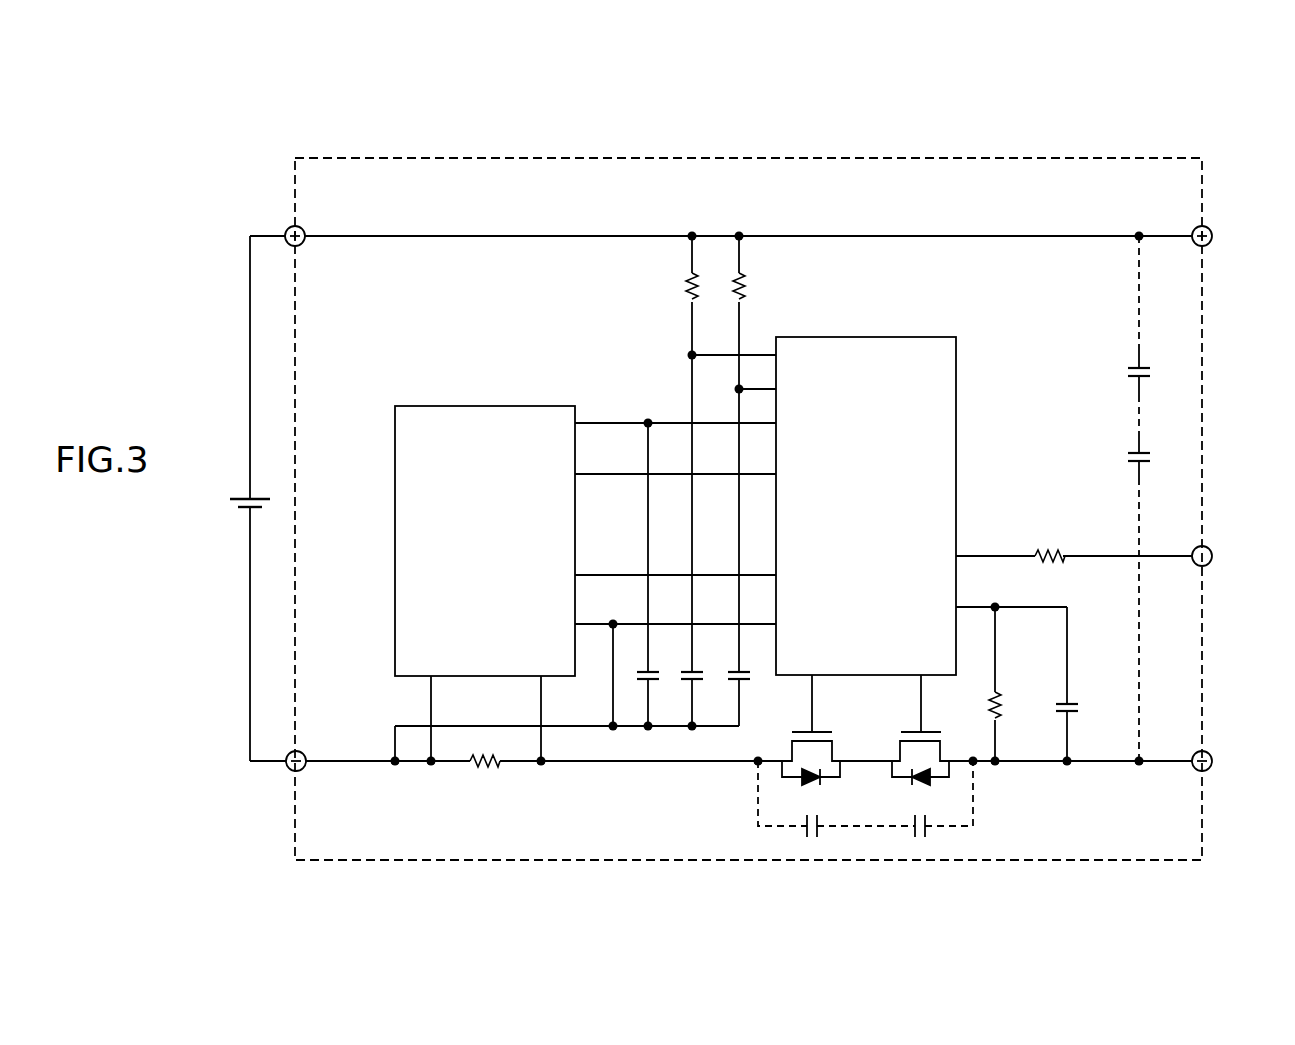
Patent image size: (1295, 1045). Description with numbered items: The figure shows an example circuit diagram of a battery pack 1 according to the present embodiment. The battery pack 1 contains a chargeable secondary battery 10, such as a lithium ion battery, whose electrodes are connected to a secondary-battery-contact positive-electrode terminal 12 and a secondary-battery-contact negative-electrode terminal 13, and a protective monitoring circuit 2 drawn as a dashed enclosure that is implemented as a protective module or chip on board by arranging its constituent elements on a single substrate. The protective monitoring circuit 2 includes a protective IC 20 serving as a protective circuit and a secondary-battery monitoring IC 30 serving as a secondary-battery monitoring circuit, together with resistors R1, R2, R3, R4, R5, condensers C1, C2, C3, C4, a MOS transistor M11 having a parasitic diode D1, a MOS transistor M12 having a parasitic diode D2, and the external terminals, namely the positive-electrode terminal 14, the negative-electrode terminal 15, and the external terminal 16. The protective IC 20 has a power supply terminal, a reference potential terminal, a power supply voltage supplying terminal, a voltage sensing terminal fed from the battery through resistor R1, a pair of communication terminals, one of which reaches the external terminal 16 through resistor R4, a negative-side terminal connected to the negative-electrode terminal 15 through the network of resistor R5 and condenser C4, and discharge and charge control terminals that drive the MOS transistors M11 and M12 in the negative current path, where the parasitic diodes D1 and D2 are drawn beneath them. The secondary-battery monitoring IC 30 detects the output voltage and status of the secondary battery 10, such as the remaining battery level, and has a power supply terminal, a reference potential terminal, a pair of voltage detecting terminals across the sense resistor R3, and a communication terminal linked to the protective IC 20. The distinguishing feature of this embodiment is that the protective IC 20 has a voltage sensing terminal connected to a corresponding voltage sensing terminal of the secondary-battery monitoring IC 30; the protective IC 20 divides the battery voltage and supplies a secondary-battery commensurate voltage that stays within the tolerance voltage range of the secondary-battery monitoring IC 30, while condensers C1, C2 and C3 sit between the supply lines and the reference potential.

The battery pack 1 is at (1167, 73).
The protective monitoring circuit 2 is at (1058, 158).
The secondary battery 10 is at (243, 498).
The secondary-battery-contact positive-electrode terminal 12 is at (304, 229).
The secondary-battery-contact negative-electrode terminal 13 is at (305, 768).
The positive-electrode terminal 14 is at (1211, 229).
The negative-electrode terminal 15 is at (1211, 753).
The external terminal 16 is at (1211, 548).
The protective IC 20 is at (893, 337).
The secondary-battery monitoring IC 30 is at (513, 406).
The resistor R1 is at (680, 454).
The resistor R2 is at (727, 454).
The resistor R3 is at (485, 775).
The resistor R4 is at (1074, 540).
The resistor R5 is at (1012, 684).
The condenser C1 is at (654, 682).
The condenser C2 is at (698, 682).
The condenser C3 is at (745, 682).
The condenser C4 is at (1071, 701).
The MOS transistor M11 is at (826, 703).
The MOS transistor M12 is at (935, 703).
The parasitic diode D1 is at (811, 787).
The parasitic diode D2 is at (920, 787).